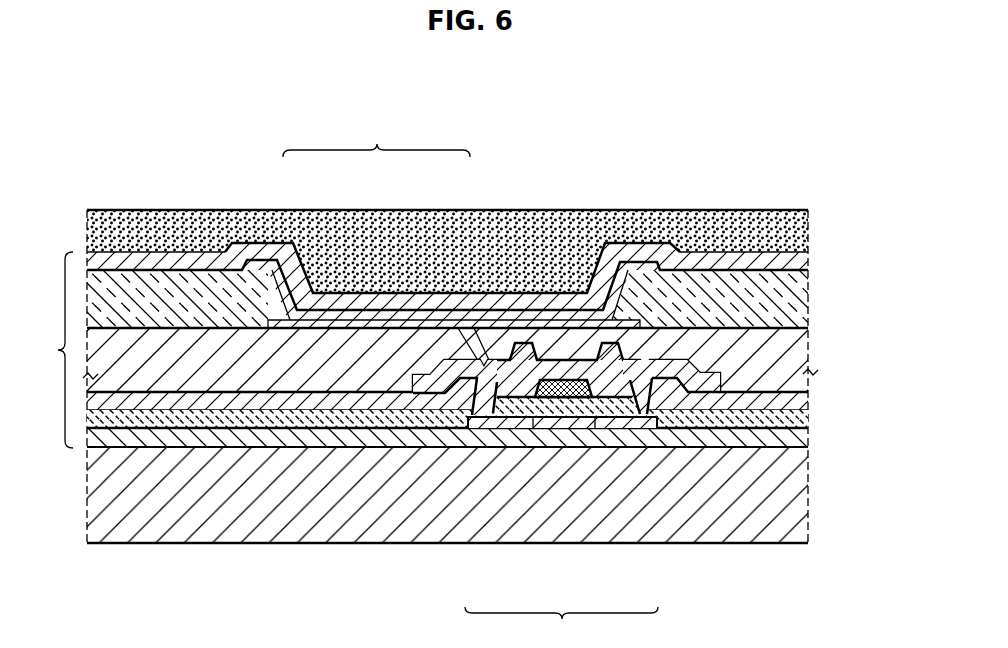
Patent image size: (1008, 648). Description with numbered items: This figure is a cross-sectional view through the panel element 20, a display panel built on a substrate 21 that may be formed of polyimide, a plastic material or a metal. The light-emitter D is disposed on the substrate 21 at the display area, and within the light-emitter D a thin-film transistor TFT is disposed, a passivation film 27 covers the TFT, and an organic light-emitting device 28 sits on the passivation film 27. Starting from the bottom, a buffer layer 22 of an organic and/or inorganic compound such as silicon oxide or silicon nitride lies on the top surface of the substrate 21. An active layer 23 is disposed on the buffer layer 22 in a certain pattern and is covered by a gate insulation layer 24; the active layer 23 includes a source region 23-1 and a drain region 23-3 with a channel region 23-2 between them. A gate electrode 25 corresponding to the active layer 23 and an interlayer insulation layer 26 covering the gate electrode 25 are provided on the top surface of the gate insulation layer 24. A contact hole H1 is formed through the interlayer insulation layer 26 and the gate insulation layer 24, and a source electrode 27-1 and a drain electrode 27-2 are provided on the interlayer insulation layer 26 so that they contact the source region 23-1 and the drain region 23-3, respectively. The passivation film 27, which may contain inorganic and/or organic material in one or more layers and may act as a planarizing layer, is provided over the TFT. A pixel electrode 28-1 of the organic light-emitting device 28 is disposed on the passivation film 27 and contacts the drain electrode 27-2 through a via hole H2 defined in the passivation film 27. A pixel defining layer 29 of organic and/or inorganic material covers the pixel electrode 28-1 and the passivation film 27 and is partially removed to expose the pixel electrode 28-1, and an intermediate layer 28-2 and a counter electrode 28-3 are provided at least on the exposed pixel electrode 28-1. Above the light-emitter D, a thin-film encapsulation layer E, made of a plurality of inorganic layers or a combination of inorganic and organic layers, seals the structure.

The panel element 20 is at (96, 152).
The substrate 21 is at (805, 516).
The buffer layer 22 is at (805, 440).
The active layer 23 is at (561, 532).
The source region 23-1 is at (632, 428).
The channel region 23-2 is at (568, 428).
The drain region 23-3 is at (497, 428).
The gate insulation layer 24 is at (805, 420).
The gate electrode 25 is at (570, 380).
The interlayer insulation layer 26 is at (805, 398).
The passivation film 27 is at (805, 366).
The source electrode 27-1 is at (608, 340).
The drain electrode 27-2 is at (526, 345).
The organic light-emitting device 28 is at (376, 137).
The pixel electrode 28-1 is at (328, 312).
The intermediate layer 28-2 is at (392, 305).
The counter electrode 28-3 is at (462, 300).
The pixel defining layer 29 is at (805, 290).
The thin-film encapsulation layer E is at (805, 238).
The contact hole H1 is at (690, 345).
The via hole H2 is at (473, 345).
The thin-film transistor TFT is at (695, 362).
The light-emitter D is at (53, 350).